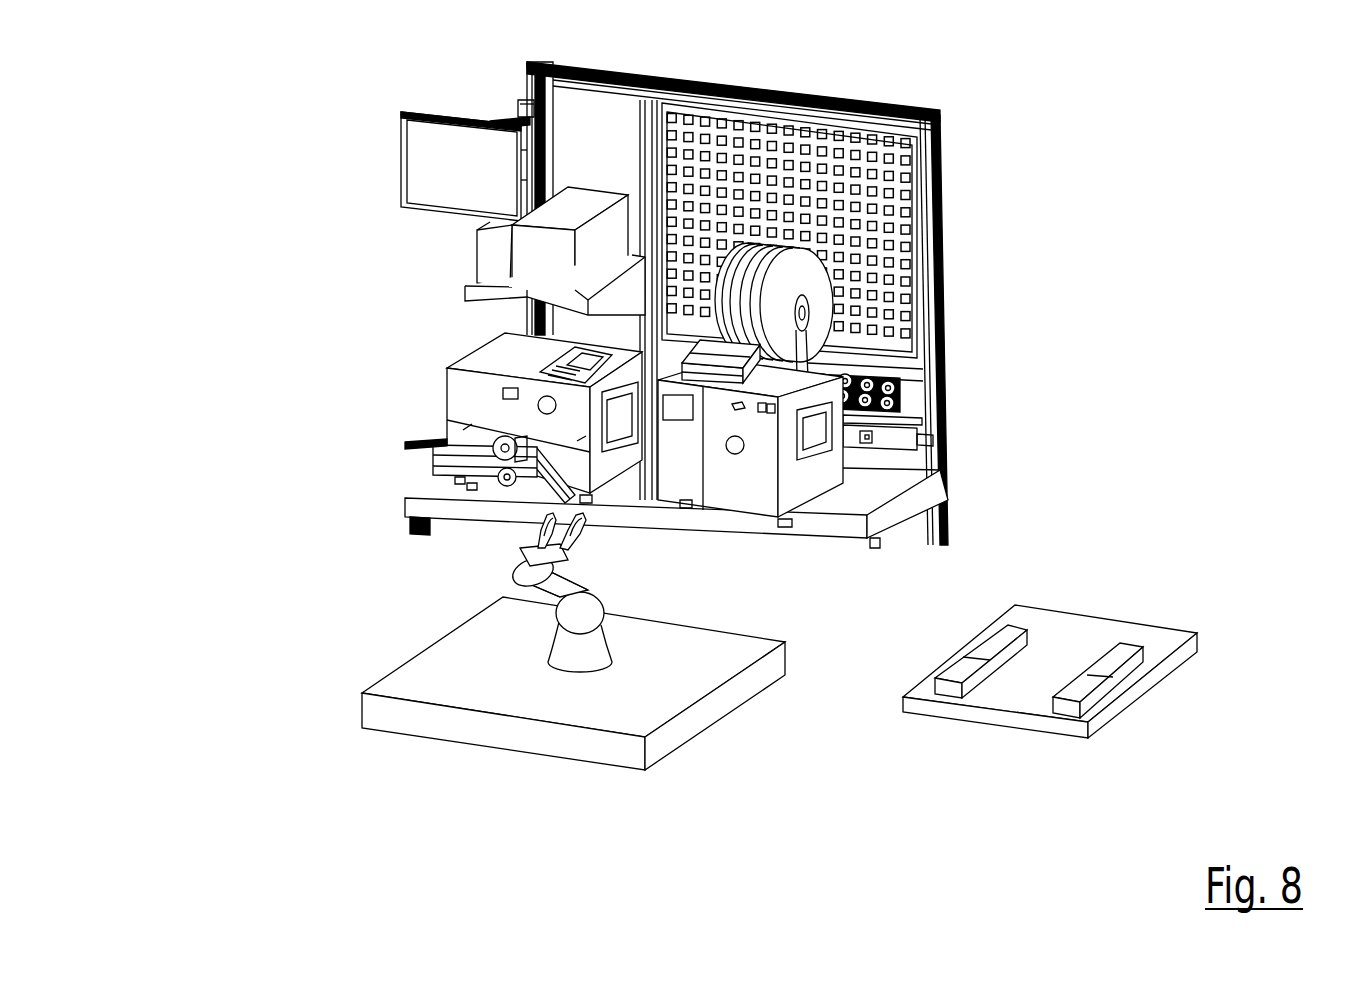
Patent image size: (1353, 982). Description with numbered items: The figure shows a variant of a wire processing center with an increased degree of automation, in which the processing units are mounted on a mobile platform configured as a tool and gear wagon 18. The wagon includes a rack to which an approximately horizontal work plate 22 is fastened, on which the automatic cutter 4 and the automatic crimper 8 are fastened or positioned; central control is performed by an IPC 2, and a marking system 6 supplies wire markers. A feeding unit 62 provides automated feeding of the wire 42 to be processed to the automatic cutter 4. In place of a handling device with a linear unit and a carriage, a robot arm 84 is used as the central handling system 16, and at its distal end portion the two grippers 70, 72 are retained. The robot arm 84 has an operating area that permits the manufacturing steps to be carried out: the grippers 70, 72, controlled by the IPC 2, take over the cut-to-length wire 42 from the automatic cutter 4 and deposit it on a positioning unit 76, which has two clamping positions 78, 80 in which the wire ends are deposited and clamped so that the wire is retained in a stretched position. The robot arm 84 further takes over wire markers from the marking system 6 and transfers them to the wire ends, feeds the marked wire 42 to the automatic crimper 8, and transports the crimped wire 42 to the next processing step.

The IPC 2 is at (440, 130).
The automatic cutter 4 is at (483, 392).
The marking system 6 is at (485, 238).
The automatic crimper 8 is at (752, 454).
The central handling system 16 is at (410, 755).
The tool and gear wagon 18 is at (957, 373).
The work plate 22 is at (833, 508).
The wire 42 is at (428, 447).
The feeding unit 62 is at (462, 455).
The gripper 70 is at (543, 533).
The gripper 72 is at (575, 532).
The positioning unit 76 is at (1123, 703).
The clamping position 78 is at (1003, 635).
The clamping position 80 is at (1120, 655).
The robot arm 84 is at (580, 652).